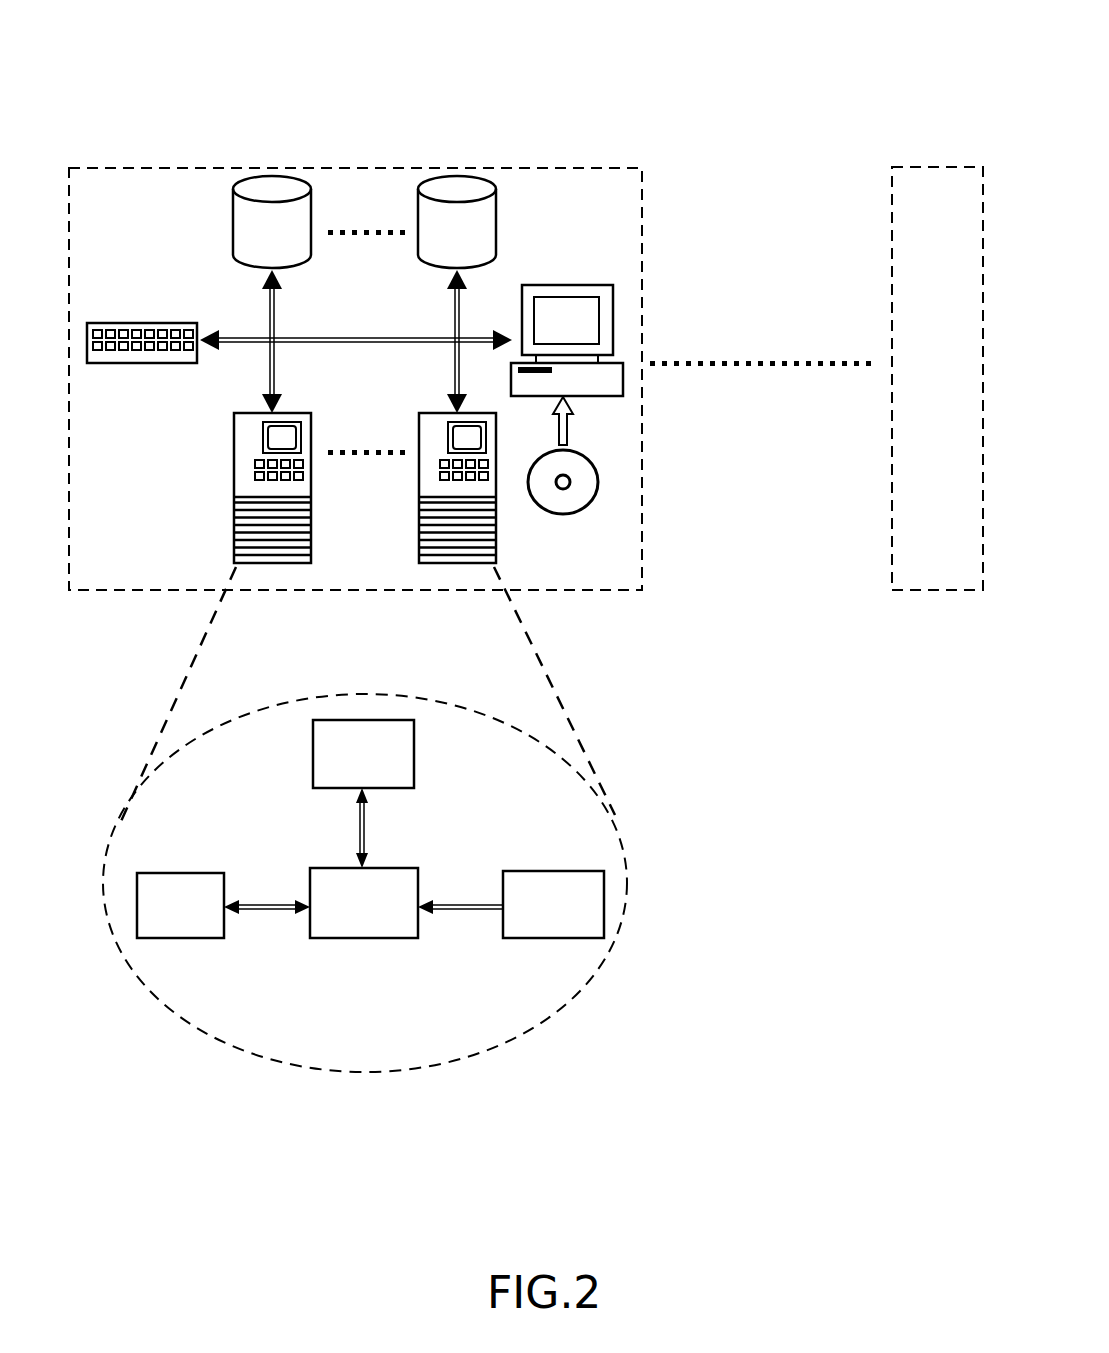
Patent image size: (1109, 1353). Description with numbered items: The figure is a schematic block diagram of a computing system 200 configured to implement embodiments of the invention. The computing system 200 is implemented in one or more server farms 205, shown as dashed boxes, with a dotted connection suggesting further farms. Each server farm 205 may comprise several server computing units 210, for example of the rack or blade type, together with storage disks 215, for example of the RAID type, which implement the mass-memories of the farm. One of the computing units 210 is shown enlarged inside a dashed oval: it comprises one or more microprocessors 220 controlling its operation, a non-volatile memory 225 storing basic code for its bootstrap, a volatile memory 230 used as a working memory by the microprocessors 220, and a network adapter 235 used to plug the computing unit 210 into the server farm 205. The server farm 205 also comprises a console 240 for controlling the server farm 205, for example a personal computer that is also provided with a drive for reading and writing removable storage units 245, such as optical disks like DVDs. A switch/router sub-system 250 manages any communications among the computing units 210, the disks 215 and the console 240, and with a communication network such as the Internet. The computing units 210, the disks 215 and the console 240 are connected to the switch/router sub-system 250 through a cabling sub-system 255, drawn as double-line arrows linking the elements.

The computing system 200 is at (640, 46).
The server farm 205 is at (367, 166).
The server computing unit 210 is at (236, 525).
The storage disk 215 is at (235, 248).
The microprocessor 220 is at (387, 870).
The non-volatile memory 225 is at (517, 870).
The volatile memory 230 is at (182, 873).
The network adapter 235 is at (313, 750).
The console 240 is at (537, 285).
The removable storage unit 245 is at (547, 512).
The switch/router sub-system 250 is at (117, 364).
The cabling sub-system 255 is at (345, 343).